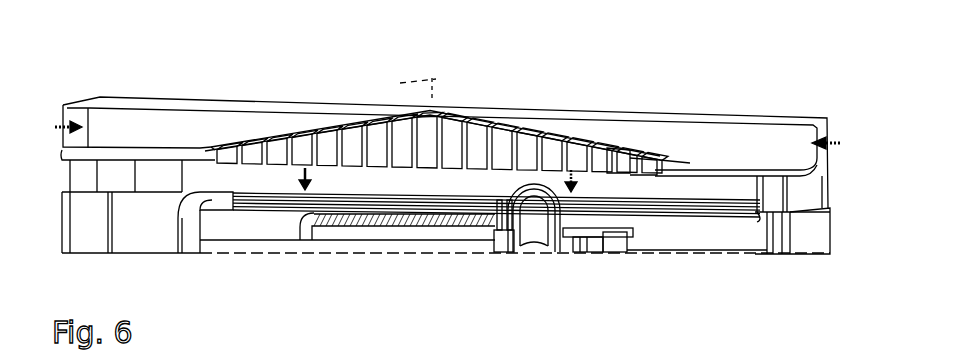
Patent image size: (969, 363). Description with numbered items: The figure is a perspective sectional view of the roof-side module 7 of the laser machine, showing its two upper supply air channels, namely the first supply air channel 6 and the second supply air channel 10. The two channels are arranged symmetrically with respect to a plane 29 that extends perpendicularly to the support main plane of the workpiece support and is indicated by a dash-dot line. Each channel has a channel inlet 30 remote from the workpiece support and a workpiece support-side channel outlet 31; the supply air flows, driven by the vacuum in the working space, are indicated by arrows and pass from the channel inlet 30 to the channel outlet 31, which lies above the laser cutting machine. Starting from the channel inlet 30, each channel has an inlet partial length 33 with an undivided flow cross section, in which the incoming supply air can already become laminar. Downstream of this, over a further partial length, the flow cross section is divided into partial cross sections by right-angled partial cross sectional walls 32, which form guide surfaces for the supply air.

The first supply air channel 6 is at (710, 105).
The roof-side module 7 is at (122, 260).
The second supply air channel 10 is at (155, 90).
The plane 29 is at (433, 80).
The channel inlet 30 is at (70, 116).
The channel outlet 31 is at (360, 191).
The partial cross sectional walls 32 is at (347, 132).
The partial length 33 is at (167, 137).